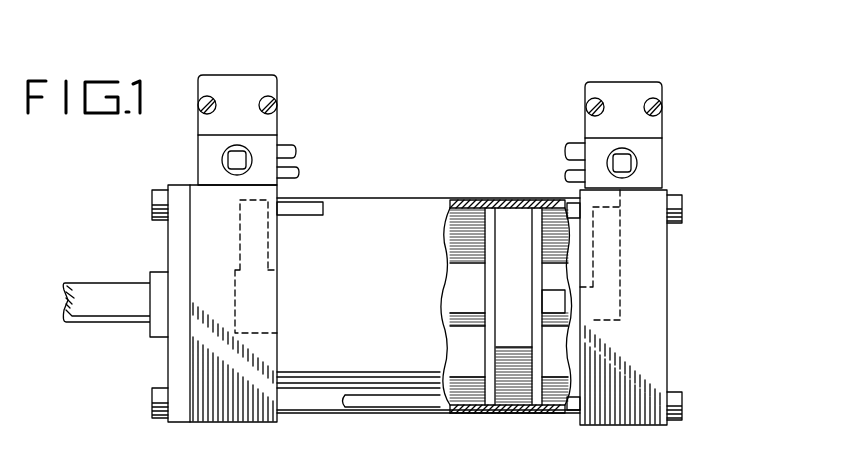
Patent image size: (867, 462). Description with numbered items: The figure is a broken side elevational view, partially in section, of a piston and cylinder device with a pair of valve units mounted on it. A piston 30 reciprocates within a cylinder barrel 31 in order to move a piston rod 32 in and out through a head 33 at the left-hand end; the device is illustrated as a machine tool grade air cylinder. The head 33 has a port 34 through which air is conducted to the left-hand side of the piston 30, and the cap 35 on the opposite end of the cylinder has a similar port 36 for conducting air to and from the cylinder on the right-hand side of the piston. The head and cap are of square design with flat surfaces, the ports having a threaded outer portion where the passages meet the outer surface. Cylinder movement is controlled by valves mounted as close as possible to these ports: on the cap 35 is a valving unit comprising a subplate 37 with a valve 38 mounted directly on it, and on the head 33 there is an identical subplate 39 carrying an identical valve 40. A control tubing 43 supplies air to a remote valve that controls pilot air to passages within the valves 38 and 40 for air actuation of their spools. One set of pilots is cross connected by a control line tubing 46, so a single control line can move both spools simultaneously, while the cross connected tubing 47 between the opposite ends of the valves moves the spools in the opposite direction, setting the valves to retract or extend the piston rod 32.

The piston 30 is at (505, 218).
The cylinder barrel 31 is at (420, 205).
The piston rod 32 is at (104, 258).
The head 33 is at (195, 355).
The port 34 is at (268, 240).
The cap 35 is at (650, 348).
The port 36 is at (615, 281).
The subplate 37 is at (673, 156).
The valve 38 is at (673, 96).
The subplate 39 is at (190, 167).
The valve 40 is at (288, 88).
The control tubing 43 is at (301, 172).
The control line tubing 46 is at (567, 157).
The cross connected tubing 47 is at (286, 148).